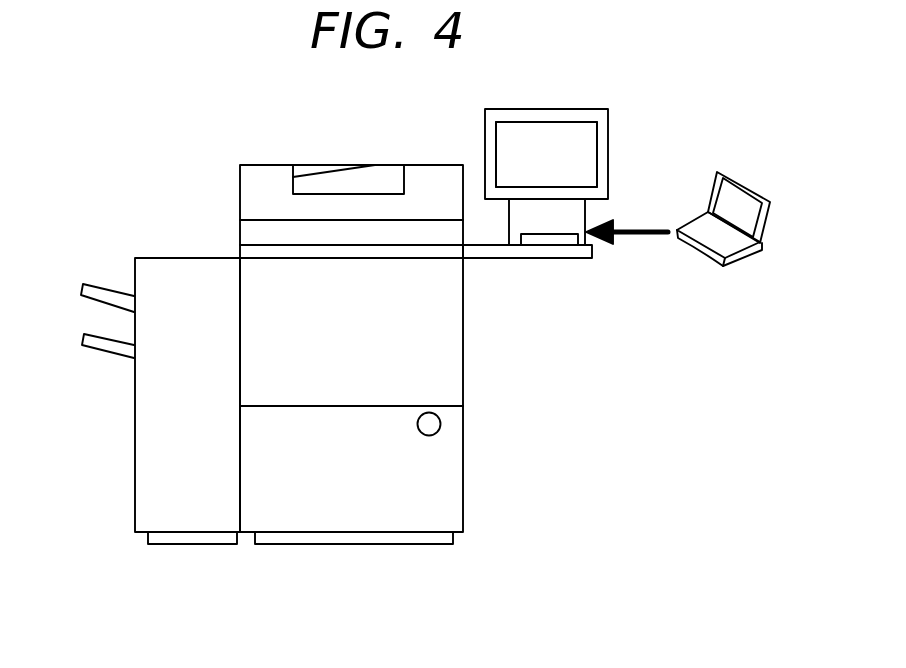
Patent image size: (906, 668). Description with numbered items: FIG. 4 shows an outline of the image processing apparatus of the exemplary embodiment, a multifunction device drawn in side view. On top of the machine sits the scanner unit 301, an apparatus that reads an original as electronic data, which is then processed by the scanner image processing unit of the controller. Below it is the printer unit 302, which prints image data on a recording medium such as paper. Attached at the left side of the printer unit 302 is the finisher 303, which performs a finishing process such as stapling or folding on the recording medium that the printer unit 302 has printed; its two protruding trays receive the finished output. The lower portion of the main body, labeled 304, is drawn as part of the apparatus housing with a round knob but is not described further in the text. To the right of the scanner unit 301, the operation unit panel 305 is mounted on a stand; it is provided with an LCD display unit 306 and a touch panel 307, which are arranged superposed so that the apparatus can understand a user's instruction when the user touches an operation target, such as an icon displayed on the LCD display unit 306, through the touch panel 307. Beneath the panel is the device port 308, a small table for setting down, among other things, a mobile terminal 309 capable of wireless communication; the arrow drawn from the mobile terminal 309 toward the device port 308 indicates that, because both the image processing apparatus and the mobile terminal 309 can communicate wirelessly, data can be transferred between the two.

The scanner unit 301 is at (248, 182).
The printer unit 302 is at (457, 360).
The finisher 303 is at (157, 272).
The sheet cassette unit 304 is at (457, 483).
The operation unit panel 305 is at (585, 113).
The LCD display unit 306 is at (584, 144).
The touch panel 307 is at (588, 170).
The device port 308 is at (558, 240).
The mobile terminal 309 is at (757, 190).